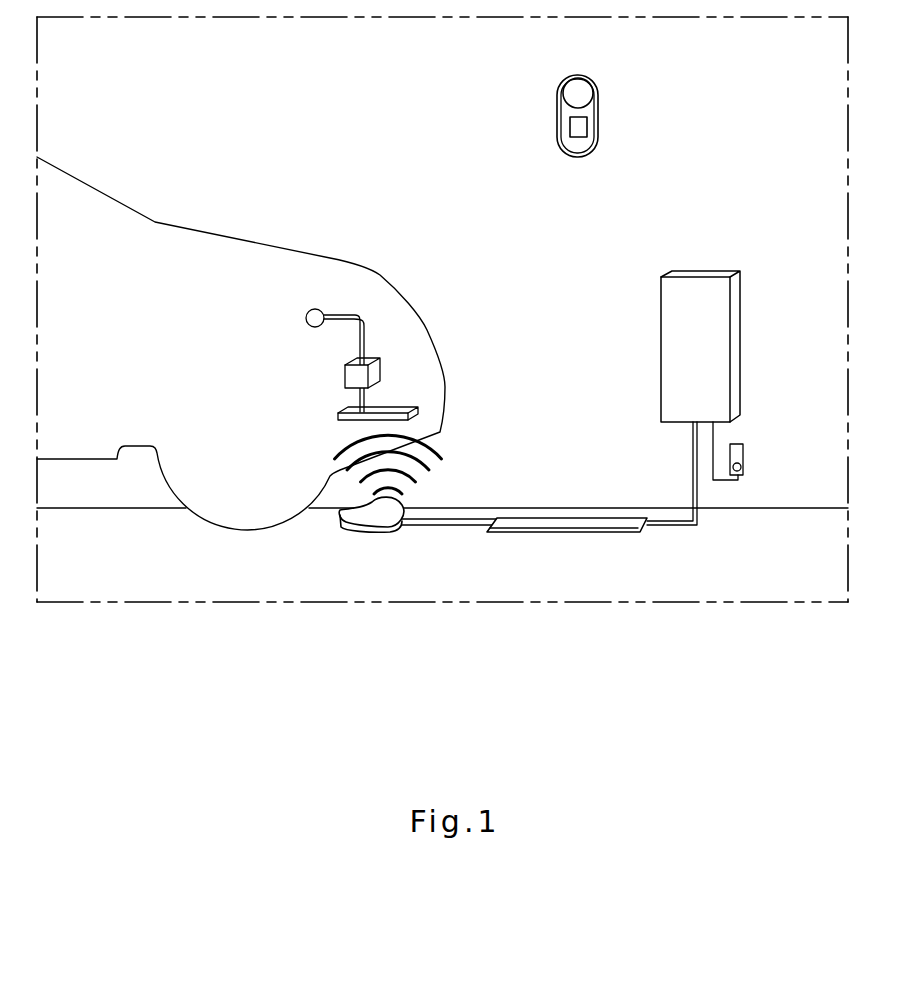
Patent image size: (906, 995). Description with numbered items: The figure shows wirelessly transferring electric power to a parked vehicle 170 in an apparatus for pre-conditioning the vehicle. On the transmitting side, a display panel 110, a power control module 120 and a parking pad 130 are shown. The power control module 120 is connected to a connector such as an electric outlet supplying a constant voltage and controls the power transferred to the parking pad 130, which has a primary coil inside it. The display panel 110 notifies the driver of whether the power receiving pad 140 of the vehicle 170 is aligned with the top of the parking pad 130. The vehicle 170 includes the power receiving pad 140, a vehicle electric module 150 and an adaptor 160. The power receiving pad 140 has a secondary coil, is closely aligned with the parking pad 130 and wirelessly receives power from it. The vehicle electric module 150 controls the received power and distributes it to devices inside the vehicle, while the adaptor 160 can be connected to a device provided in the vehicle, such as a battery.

The display panel 110 is at (598, 120).
The power control module 120 is at (733, 288).
The parking pad 130 is at (353, 527).
The power receiving pad 140 is at (410, 412).
The vehicle electric module 150 is at (375, 372).
The adaptor 160 is at (323, 308).
The vehicle 170 is at (122, 202).